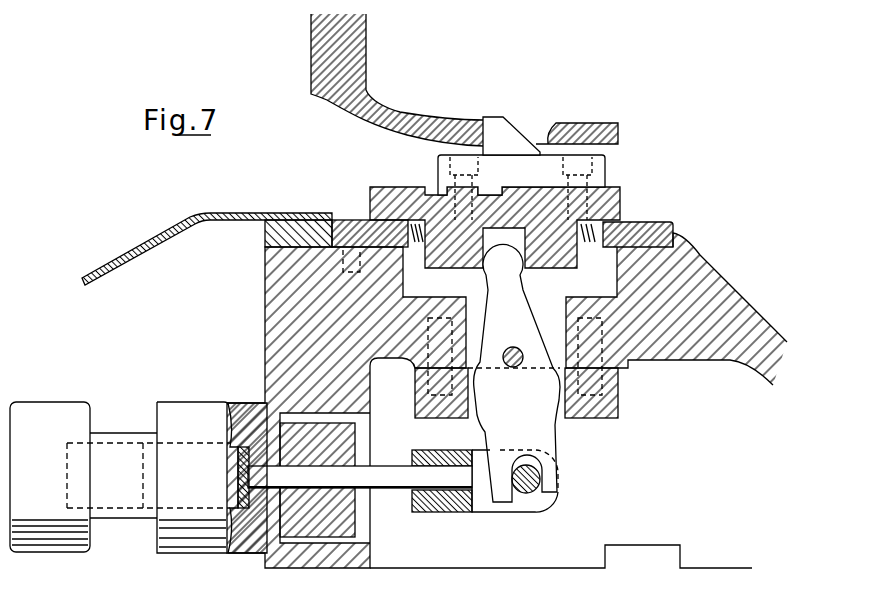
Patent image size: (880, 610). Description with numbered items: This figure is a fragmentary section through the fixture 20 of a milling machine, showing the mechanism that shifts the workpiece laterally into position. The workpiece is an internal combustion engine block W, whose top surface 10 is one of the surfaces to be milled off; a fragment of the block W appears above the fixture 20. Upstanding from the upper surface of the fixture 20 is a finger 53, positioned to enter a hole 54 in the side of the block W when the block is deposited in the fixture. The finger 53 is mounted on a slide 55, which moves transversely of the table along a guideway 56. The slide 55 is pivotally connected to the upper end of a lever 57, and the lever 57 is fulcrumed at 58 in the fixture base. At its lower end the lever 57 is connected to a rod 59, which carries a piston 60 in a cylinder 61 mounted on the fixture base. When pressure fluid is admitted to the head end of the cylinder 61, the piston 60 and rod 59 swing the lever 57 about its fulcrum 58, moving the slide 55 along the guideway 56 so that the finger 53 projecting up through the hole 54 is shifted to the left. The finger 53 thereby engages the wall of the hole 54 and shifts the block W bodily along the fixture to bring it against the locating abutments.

The top surface 10 is at (312, 48).
The engine block W is at (322, 70).
The fixture 20 is at (711, 266).
The finger 53 is at (500, 118).
The hole 54 is at (553, 128).
The slide 55 is at (624, 200).
The guideway 56 is at (596, 240).
The lever 57 is at (520, 290).
The fulcrum 58 is at (474, 392).
The rod 59 is at (400, 488).
The piston 60 is at (237, 490).
The cylinder 61 is at (249, 508).